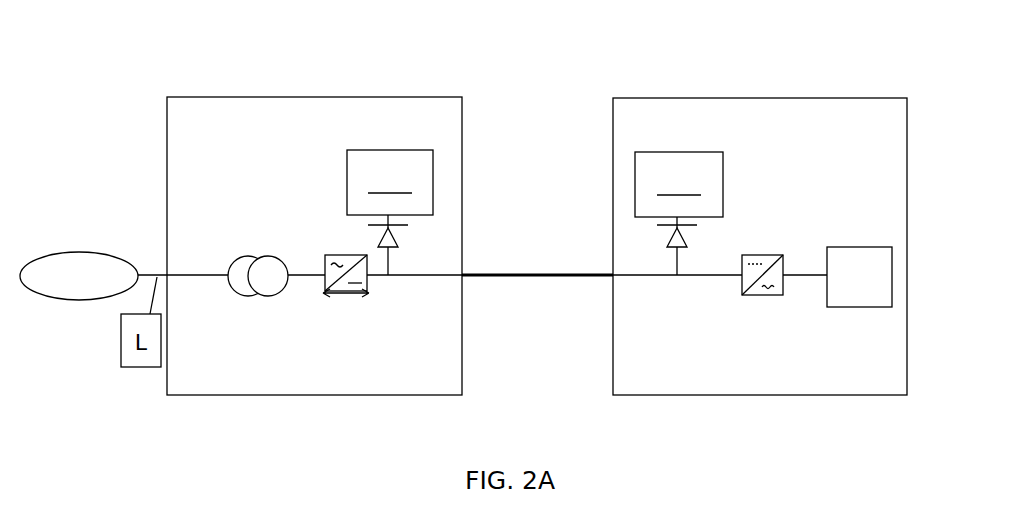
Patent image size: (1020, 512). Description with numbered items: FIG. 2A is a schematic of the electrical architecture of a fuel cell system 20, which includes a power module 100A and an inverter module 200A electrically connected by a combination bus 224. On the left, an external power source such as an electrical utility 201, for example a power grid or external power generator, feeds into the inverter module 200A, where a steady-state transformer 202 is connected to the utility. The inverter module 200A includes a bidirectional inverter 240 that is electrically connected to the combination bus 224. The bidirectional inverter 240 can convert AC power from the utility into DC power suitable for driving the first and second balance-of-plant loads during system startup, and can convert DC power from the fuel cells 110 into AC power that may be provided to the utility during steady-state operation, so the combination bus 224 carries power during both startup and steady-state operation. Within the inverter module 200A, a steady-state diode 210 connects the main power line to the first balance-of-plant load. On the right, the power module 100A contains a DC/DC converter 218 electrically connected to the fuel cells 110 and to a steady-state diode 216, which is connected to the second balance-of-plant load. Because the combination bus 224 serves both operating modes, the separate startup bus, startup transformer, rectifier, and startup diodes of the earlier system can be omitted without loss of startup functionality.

The fuel cell system 20 is at (540, 413).
The inverter module 200A is at (308, 97).
The power module 100A is at (727, 98).
The electrical utility 201 is at (92, 252).
The steady-state transformer 202 is at (250, 288).
The bidirectional inverter 240 is at (343, 297).
The steady-state diode 210 is at (394, 240).
The combination bus 224 is at (578, 278).
The steady-state diode 216 is at (680, 245).
The DC/DC converter 218 is at (752, 295).
The fuel cells 110 is at (838, 305).